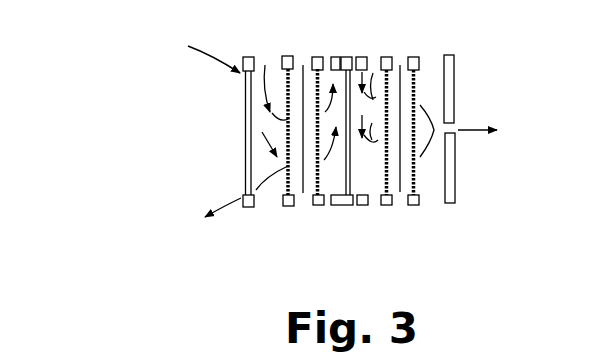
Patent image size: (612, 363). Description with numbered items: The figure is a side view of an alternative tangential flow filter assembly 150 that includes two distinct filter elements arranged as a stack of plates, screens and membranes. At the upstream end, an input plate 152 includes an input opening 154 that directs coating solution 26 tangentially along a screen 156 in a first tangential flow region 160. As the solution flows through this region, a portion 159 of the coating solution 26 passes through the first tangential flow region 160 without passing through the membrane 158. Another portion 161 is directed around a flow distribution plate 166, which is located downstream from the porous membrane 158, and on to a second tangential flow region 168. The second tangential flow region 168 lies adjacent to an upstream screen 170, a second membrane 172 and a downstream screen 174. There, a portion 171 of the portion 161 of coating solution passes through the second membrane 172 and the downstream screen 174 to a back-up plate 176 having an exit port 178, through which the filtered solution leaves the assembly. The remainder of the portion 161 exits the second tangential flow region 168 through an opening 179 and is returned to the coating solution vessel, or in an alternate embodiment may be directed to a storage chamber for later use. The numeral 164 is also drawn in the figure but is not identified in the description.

The filter assembly 150 is at (128, 100).
The input plate 152 is at (247, 56).
The coating solution 26 is at (263, 120).
The input opening 154 is at (244, 73).
The screen 156 is at (287, 55).
The membrane 158 is at (295, 206).
The portion 159 is at (197, 201).
The first tangential flow region 160 is at (263, 134).
The portion 161 is at (340, 57).
The second membrane 164 is at (317, 206).
The flow distribution plate 166 is at (343, 57).
The second tangential flow region 168 is at (372, 68).
The upstream screen 170 is at (386, 206).
The portion 171 is at (462, 128).
The second membrane 172 is at (394, 205).
The downstream screen 174 is at (414, 56).
The back-up plate 176 is at (450, 204).
The exit port 178 is at (460, 133).
The opening 179 is at (357, 207).